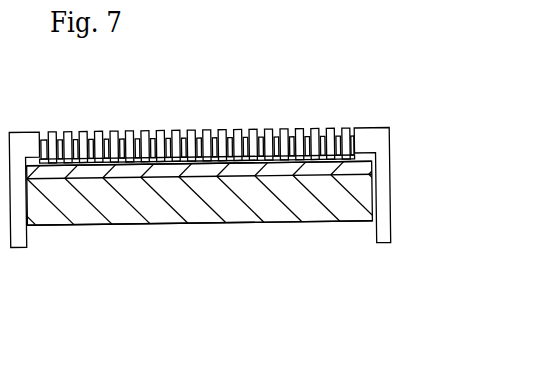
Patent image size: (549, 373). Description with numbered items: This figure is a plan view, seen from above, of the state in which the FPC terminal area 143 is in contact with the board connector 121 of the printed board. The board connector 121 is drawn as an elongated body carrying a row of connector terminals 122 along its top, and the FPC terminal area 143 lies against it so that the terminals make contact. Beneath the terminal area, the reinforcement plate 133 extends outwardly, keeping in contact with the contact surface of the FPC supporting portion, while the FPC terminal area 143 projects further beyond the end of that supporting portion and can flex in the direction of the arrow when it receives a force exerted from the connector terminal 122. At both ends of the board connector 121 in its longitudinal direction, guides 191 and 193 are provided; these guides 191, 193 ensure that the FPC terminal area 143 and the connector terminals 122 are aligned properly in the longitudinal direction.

The board connector 121 is at (210, 257).
The connector terminal 122 is at (147, 130).
The reinforcement plate 133 is at (238, 224).
The FPC terminal area 143 is at (256, 164).
The guide 191 is at (390, 246).
The guide 193 is at (25, 246).